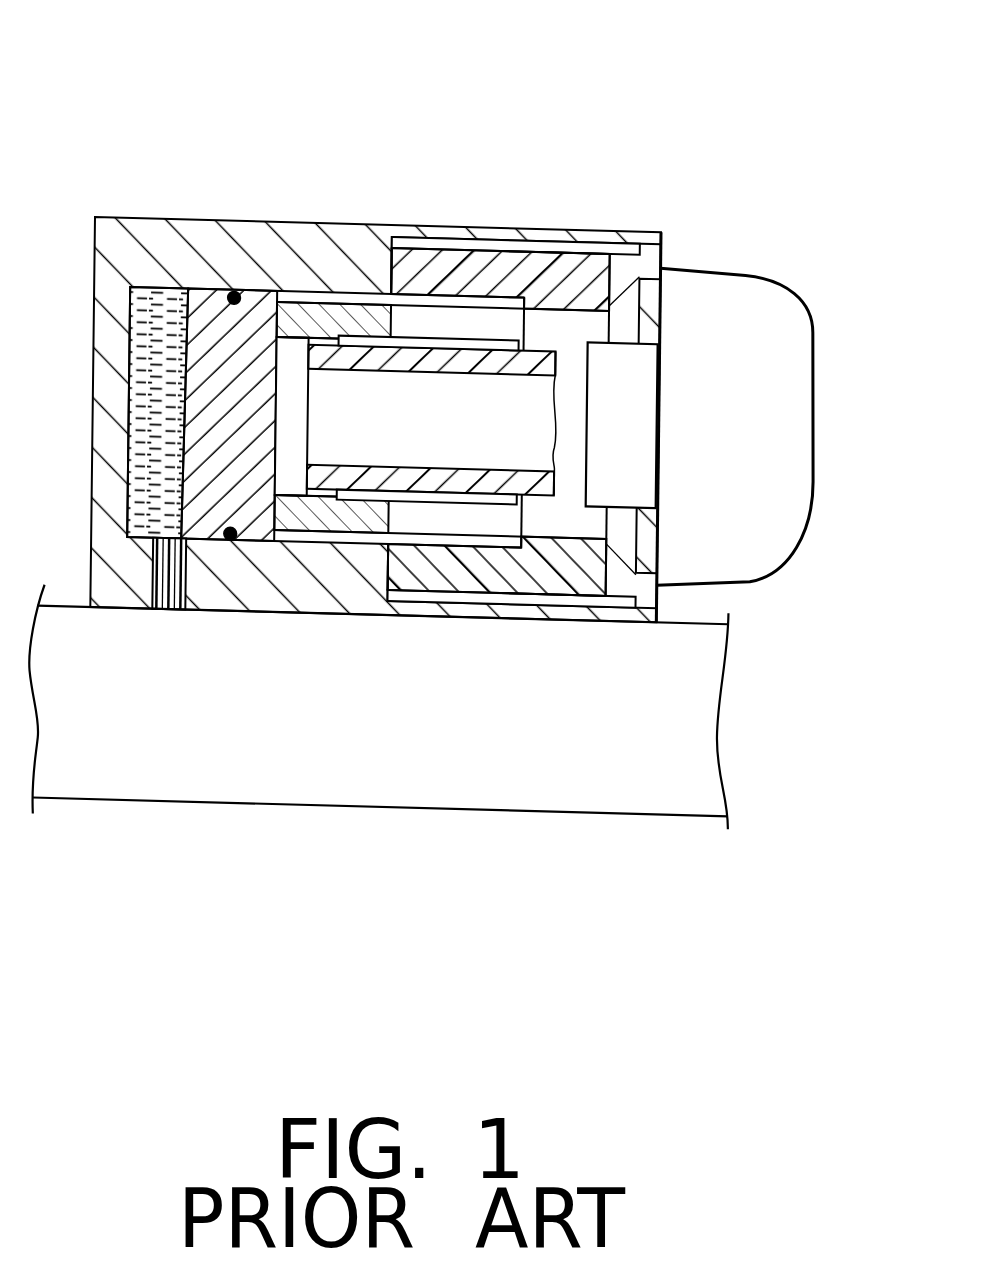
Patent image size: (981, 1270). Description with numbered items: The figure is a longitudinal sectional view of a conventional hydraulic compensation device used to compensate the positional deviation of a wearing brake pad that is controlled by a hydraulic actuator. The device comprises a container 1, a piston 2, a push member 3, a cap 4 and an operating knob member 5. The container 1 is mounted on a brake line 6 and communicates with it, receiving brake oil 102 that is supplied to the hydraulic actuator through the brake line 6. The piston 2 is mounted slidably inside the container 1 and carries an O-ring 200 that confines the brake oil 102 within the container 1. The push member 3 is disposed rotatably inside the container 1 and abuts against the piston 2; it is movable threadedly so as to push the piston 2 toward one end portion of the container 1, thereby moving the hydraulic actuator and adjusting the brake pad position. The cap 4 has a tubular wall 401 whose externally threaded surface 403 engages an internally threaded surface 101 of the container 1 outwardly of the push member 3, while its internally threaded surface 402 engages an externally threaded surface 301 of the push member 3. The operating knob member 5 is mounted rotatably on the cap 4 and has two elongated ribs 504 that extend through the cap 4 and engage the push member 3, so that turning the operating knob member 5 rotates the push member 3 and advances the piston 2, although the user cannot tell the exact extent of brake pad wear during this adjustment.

The container 1 is at (93, 213).
The brake oil 102 is at (151, 300).
The piston 2 is at (209, 312).
The O-ring 200 is at (237, 292).
The push member 3 is at (327, 310).
The externally threaded surface 301 is at (373, 305).
The internally threaded surface 101 is at (494, 266).
The cap 4 is at (641, 247).
The tubular wall 401 is at (496, 264).
The internally threaded surface 402 is at (515, 296).
The externally threaded surface 403 is at (586, 258).
The elongated ribs 504 is at (499, 484).
The operating knob member 5 is at (815, 373).
The brake line 6 is at (656, 786).